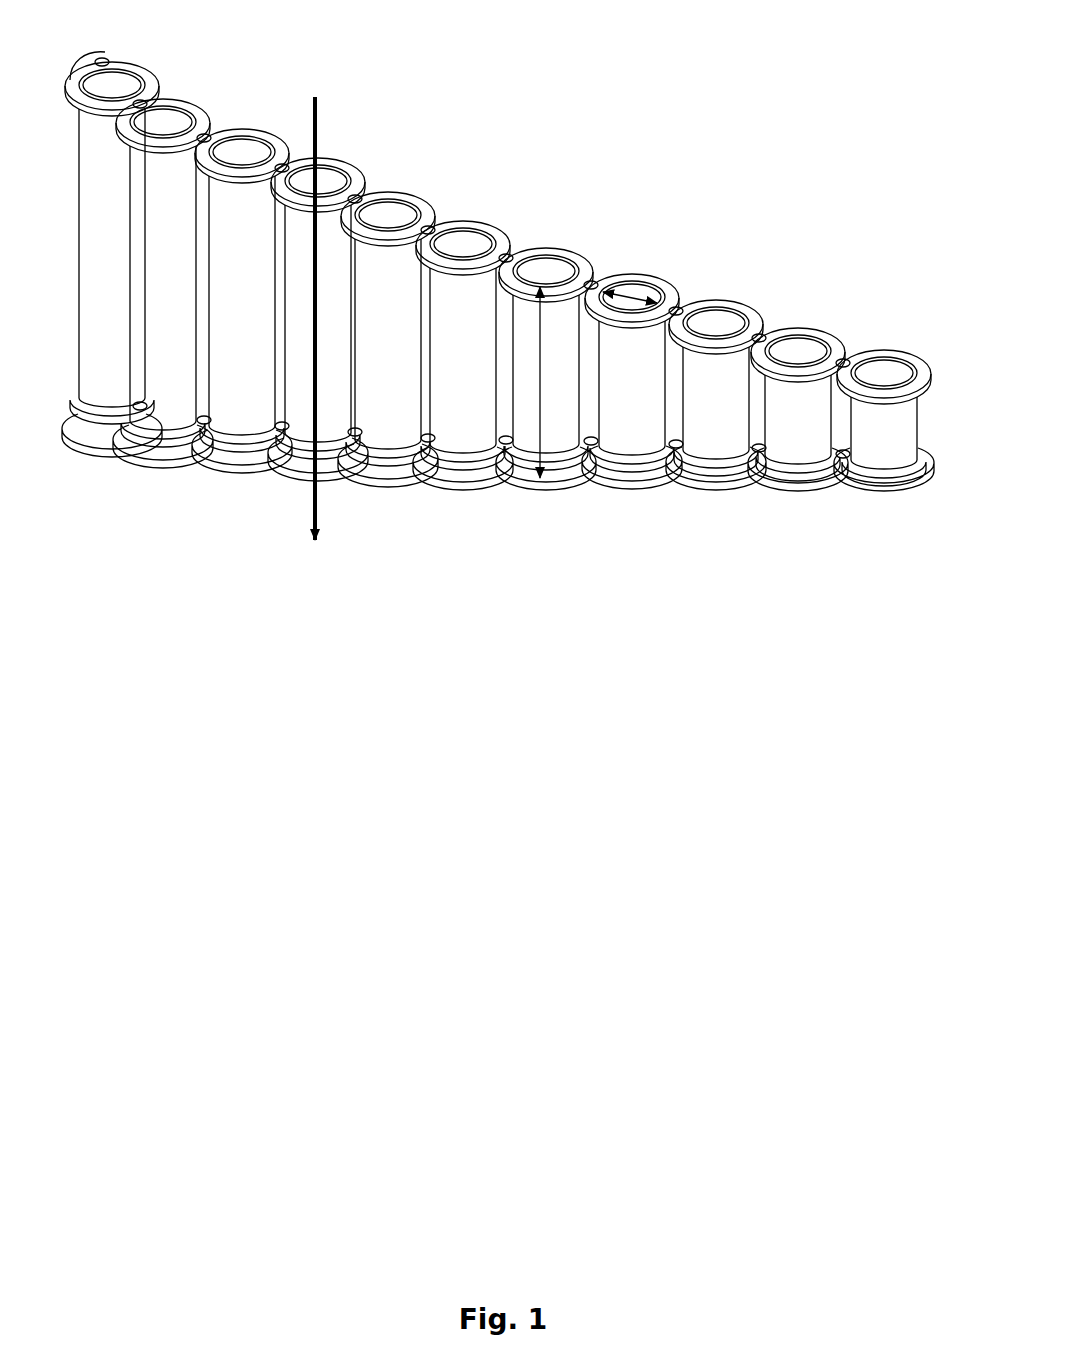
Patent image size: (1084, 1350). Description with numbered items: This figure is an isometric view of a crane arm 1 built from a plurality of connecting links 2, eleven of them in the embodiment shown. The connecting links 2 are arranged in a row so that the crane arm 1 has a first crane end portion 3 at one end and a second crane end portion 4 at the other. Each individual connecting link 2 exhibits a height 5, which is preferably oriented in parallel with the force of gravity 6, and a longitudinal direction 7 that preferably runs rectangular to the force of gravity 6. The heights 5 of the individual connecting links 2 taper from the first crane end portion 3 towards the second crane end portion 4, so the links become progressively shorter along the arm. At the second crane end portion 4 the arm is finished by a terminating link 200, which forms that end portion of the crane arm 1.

The crane arm 1 is at (498, 448).
The connecting links 2 is at (710, 413).
The first crane end portion 3 is at (172, 65).
The second crane end portion 4 is at (897, 325).
The height 5 is at (540, 395).
The force of gravity 6 is at (318, 125).
The longitudinal direction 7 is at (655, 300).
The terminating link 200 is at (885, 432).